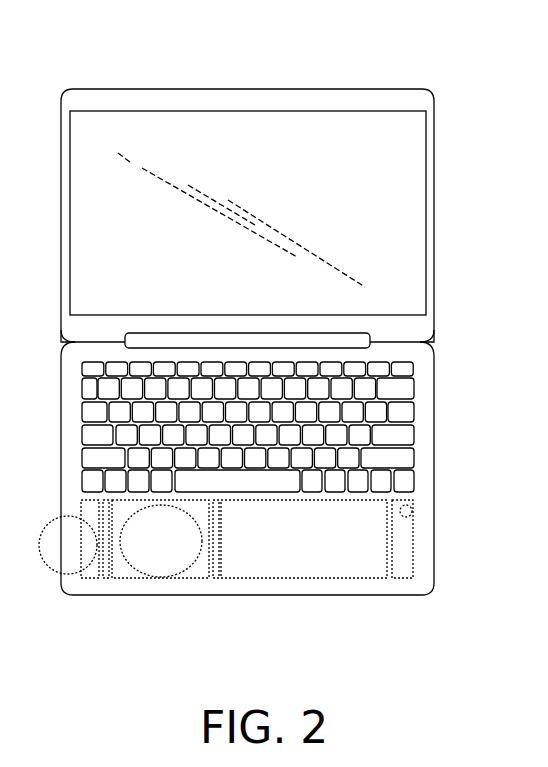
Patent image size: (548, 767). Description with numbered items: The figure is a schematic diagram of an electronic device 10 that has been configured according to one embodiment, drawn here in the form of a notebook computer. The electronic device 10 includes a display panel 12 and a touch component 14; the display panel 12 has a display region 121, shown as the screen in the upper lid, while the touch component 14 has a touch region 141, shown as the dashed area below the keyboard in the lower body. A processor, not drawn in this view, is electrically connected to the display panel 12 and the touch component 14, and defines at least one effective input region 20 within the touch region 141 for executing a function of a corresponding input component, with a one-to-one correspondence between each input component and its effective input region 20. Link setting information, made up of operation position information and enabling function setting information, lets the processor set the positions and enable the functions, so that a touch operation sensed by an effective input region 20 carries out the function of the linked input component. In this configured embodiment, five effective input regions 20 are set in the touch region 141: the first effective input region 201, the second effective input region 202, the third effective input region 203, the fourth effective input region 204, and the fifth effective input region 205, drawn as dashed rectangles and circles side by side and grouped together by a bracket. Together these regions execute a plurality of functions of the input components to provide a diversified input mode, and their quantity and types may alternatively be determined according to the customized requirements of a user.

The electronic device 10 is at (52, 84).
The display panel 12 is at (434, 138).
The display region 121 is at (408, 173).
The touch component 14 is at (434, 538).
The touch region 141 is at (414, 563).
The effective input region 20 is at (422, 648).
The first effective input region 201 is at (318, 580).
The second effective input region 202 is at (96, 583).
The third effective input region 203 is at (152, 583).
The fourth effective input region 204 is at (56, 572).
The fifth effective input region 205 is at (410, 512).